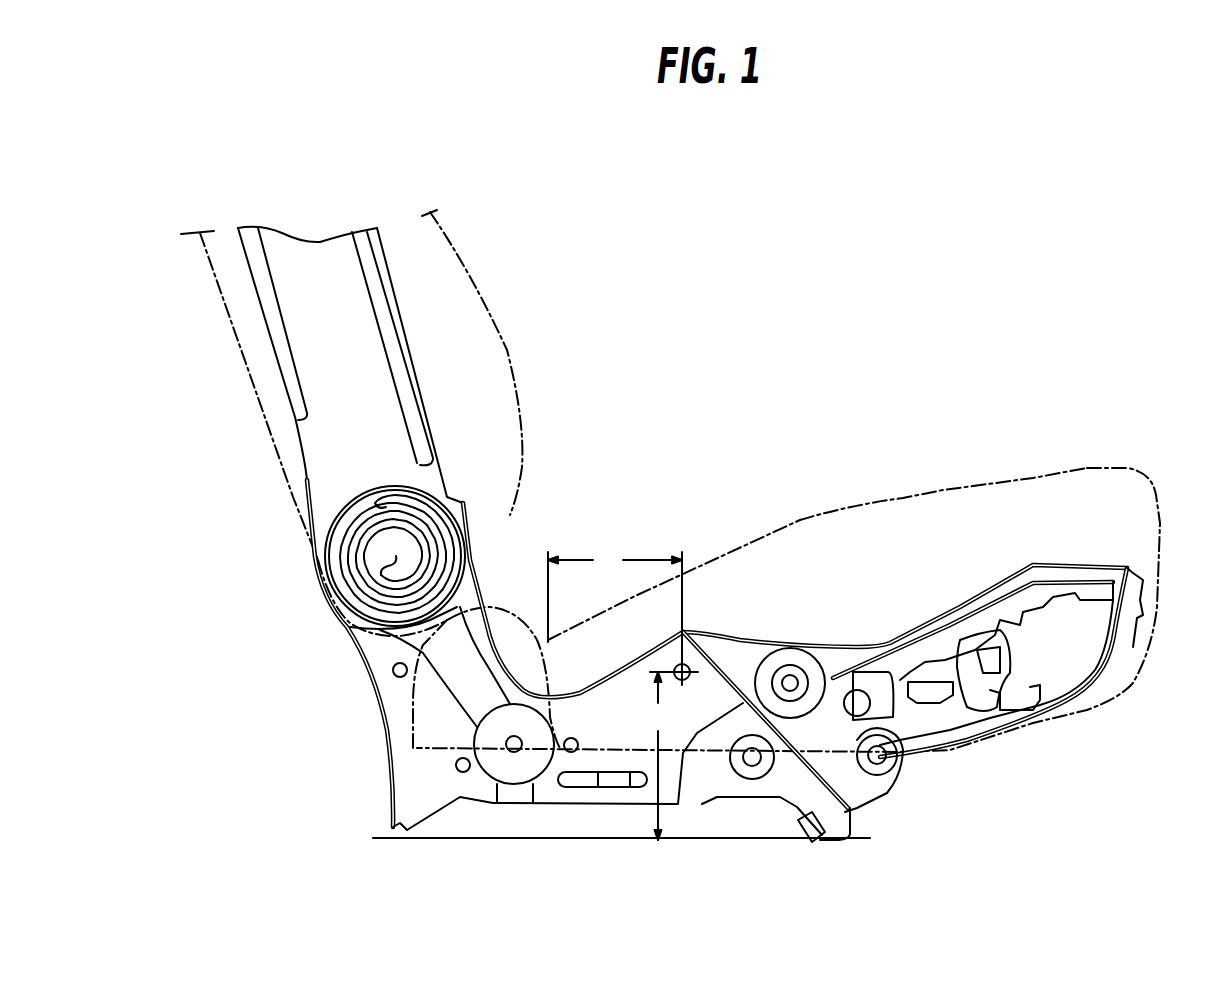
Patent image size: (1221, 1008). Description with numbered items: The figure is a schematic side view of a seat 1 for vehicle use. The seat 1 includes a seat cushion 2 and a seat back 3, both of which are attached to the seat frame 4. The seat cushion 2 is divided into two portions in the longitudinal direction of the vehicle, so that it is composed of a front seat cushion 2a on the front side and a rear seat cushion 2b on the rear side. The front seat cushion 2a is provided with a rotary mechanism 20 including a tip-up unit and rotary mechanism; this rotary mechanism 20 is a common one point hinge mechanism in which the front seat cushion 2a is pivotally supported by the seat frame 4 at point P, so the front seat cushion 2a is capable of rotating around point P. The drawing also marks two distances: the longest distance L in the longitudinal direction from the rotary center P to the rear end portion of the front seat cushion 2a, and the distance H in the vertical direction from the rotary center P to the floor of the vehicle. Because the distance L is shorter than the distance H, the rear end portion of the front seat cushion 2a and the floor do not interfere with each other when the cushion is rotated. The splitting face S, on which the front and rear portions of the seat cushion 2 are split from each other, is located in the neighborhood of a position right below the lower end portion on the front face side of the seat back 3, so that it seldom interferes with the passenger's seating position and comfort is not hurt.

The seat 1 is at (740, 390).
The seat cushion 2 is at (1033, 473).
The front seat cushion 2a is at (945, 490).
The rear seat cushion 2b is at (487, 573).
The seat back 3 is at (500, 323).
The seat frame 4 is at (307, 455).
The rotary mechanism 20 is at (702, 678).
The rotary center P is at (690, 666).
The splitting face S is at (562, 722).
The longest distance in the longitudinal direction L is at (615, 593).
The distance in the vertical direction H is at (658, 756).